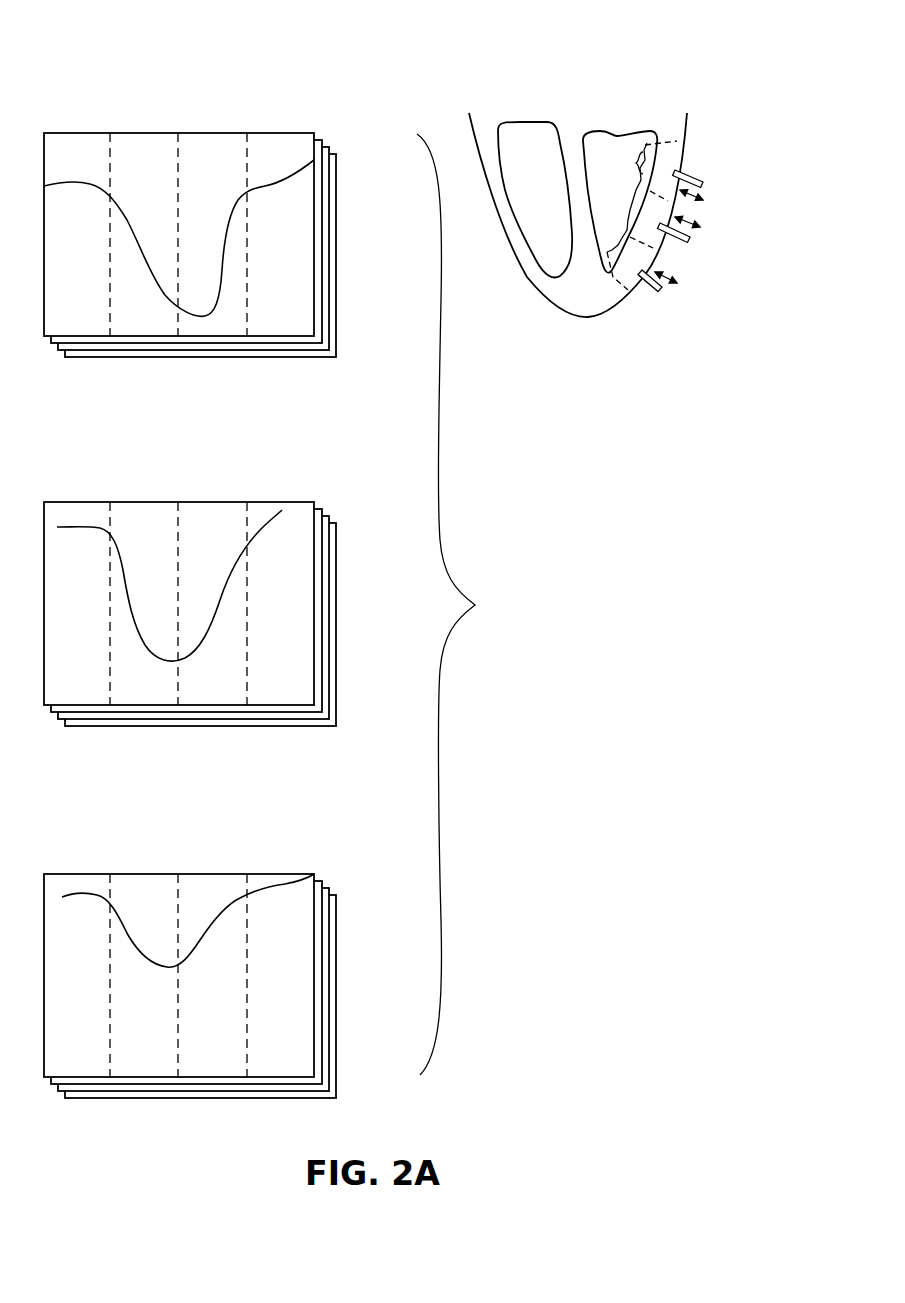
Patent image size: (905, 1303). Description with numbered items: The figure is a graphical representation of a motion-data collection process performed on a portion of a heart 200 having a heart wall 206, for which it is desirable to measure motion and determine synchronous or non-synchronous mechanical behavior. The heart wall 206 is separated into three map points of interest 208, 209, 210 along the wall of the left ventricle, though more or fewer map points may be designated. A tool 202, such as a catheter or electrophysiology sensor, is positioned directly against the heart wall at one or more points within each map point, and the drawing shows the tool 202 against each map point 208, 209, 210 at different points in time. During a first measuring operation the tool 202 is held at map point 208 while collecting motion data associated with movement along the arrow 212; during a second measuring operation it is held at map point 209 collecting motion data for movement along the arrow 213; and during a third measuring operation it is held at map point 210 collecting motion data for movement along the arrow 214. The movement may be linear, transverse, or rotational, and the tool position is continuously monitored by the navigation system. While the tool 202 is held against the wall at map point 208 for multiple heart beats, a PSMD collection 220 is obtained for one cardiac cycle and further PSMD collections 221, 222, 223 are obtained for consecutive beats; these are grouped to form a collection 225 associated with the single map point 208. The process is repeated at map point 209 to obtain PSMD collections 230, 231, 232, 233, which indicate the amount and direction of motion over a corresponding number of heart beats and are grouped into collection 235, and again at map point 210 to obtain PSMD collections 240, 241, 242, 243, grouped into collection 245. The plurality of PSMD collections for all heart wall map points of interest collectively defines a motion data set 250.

The heart 200 is at (450, 48).
The tool 202 is at (680, 168).
The heart wall 206 is at (578, 206).
The map point of interest 208 is at (603, 250).
The map point of interest 209 is at (634, 215).
The map point of interest 210 is at (624, 164).
The arrow 212 is at (670, 289).
The arrow 213 is at (691, 232).
The arrow 214 is at (696, 202).
The PSMD collection 220 is at (147, 133).
The PSMD collection 221 is at (317, 137).
The PSMD collection 222 is at (323, 145).
The PSMD collection 223 is at (330, 152).
The collection of PSMD collections 225 is at (403, 76).
The PSMD collection 230 is at (225, 502).
The PSMD collection 231 is at (317, 506).
The PSMD collection 232 is at (323, 514).
The PSMD collection 233 is at (330, 521).
The collection of PSMD collections 235 is at (403, 445).
The PSMD collection 240 is at (225, 874).
The PSMD collection 241 is at (317, 878).
The PSMD collection 242 is at (323, 886).
The PSMD collection 243 is at (330, 894).
The collection of PSMD collections 245 is at (403, 817).
The motion data set 250 is at (466, 604).